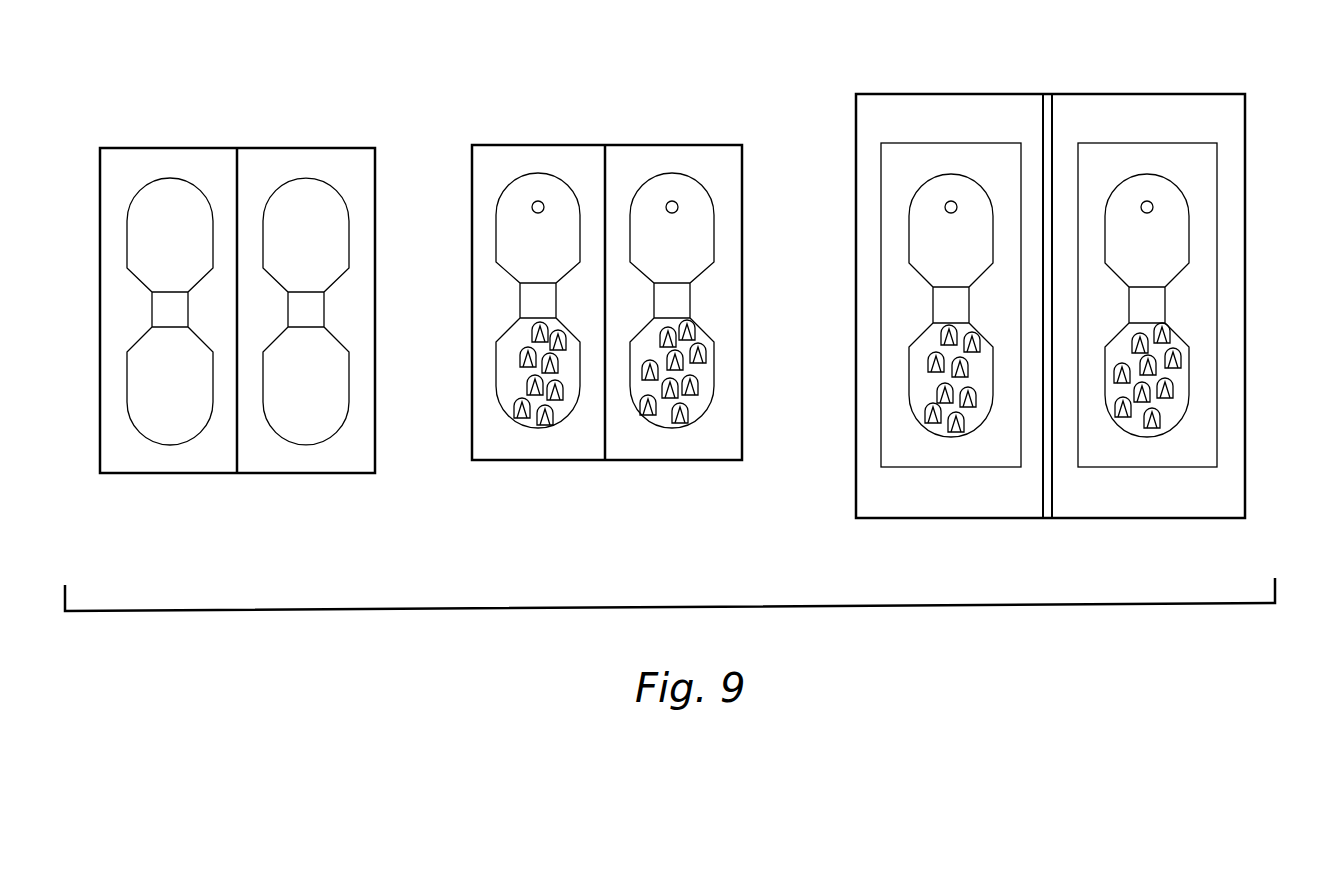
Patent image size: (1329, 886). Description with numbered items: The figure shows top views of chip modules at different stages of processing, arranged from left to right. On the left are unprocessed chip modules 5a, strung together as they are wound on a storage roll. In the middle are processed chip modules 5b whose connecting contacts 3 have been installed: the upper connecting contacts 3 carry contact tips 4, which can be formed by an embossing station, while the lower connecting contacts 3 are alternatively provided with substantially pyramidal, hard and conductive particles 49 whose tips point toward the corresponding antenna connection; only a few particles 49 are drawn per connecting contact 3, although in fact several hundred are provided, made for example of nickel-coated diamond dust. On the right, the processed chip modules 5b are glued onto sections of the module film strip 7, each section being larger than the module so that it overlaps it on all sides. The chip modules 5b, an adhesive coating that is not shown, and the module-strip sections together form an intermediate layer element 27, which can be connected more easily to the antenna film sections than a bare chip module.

The connecting contact 3 is at (163, 234).
The contact tip 4 is at (538, 200).
The unprocessed chip module 5a is at (176, 148).
The processed chip module 5b is at (524, 145).
The module film strip 7 is at (944, 131).
The intermediate layer element 27 is at (955, 94).
The particle 49 is at (713, 355).